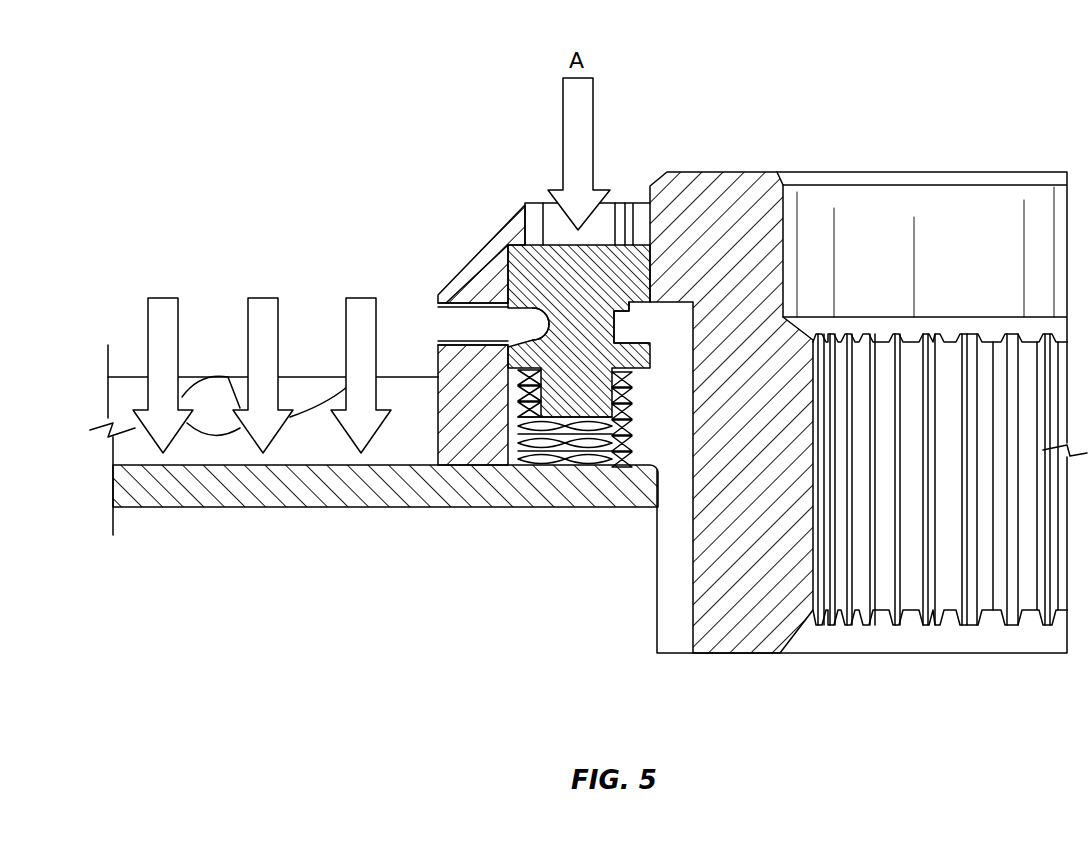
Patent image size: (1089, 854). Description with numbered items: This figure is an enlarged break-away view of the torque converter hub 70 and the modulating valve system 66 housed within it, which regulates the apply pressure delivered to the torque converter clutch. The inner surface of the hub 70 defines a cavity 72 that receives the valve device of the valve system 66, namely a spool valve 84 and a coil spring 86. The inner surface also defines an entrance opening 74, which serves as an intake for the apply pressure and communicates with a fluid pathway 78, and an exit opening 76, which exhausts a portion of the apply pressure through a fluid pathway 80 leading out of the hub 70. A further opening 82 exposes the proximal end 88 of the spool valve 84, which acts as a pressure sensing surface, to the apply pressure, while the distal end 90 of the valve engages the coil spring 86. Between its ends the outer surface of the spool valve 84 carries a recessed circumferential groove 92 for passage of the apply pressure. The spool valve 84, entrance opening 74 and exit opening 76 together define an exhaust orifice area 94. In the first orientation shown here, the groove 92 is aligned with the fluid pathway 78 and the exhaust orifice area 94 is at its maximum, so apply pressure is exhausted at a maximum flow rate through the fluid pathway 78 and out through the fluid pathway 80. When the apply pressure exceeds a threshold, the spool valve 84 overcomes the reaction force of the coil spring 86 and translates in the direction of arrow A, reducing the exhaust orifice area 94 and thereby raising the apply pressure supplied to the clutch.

The modulating valve system 66 is at (548, 162).
The hub 70 is at (505, 291).
The cavity 72 is at (608, 217).
The entrance opening 74 is at (504, 333).
The exit opening 76 is at (634, 323).
The fluid pathway 78 is at (439, 318).
The fluid pathway 80 is at (674, 620).
The opening 82 is at (537, 201).
The spool valve 84 is at (615, 420).
The coil spring 86 is at (580, 418).
The proximal end 88 is at (537, 242).
The distal end 90 is at (602, 385).
The recessed circumferential groove 92 is at (518, 318).
The exhaust orifice area 94 is at (506, 358).